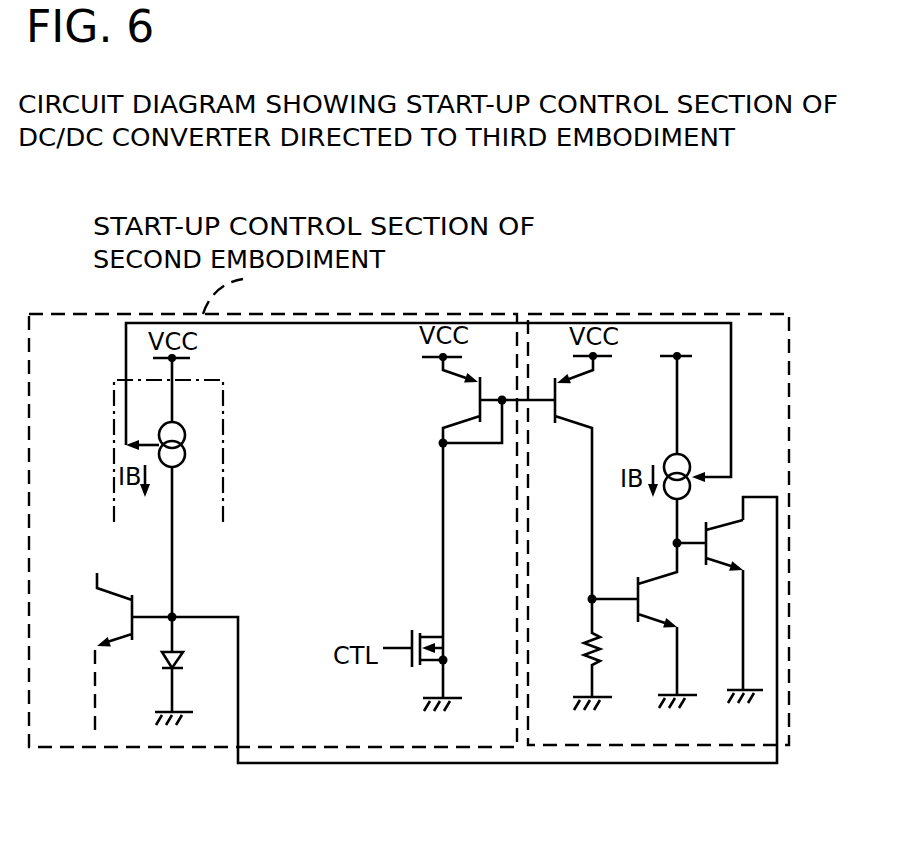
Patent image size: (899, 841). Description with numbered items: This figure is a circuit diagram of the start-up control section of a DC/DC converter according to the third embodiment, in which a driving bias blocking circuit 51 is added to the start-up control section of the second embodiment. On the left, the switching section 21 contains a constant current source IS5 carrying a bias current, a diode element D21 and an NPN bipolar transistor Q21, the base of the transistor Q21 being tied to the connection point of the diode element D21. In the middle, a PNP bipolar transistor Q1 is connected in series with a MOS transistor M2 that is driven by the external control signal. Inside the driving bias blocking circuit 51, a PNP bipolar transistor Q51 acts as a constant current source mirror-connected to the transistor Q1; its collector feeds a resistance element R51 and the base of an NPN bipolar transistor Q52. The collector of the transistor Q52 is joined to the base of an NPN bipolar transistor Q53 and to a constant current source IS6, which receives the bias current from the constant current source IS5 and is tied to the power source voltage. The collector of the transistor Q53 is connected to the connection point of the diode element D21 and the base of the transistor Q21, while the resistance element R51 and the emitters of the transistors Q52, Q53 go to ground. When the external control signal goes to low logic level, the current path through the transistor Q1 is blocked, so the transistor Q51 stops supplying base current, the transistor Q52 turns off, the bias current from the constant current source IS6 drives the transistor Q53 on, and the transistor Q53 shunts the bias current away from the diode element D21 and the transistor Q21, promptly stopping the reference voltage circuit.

The switching section 21 is at (223, 492).
The driving bias blocking circuit 51 is at (680, 313).
The constant current source IS5 is at (184, 440).
The constant current source IS6 is at (686, 468).
The NPN bipolar transistor Q21 is at (122, 654).
The diode element D21 is at (185, 655).
The PNP bipolar transistor Q1 is at (489, 402).
The MOS transistor M2 is at (432, 670).
The PNP bipolar transistor Q51 is at (589, 477).
The NPN bipolar transistor Q52 is at (648, 603).
The NPN bipolar transistor Q53 is at (720, 611).
The resistance element R51 is at (613, 654).